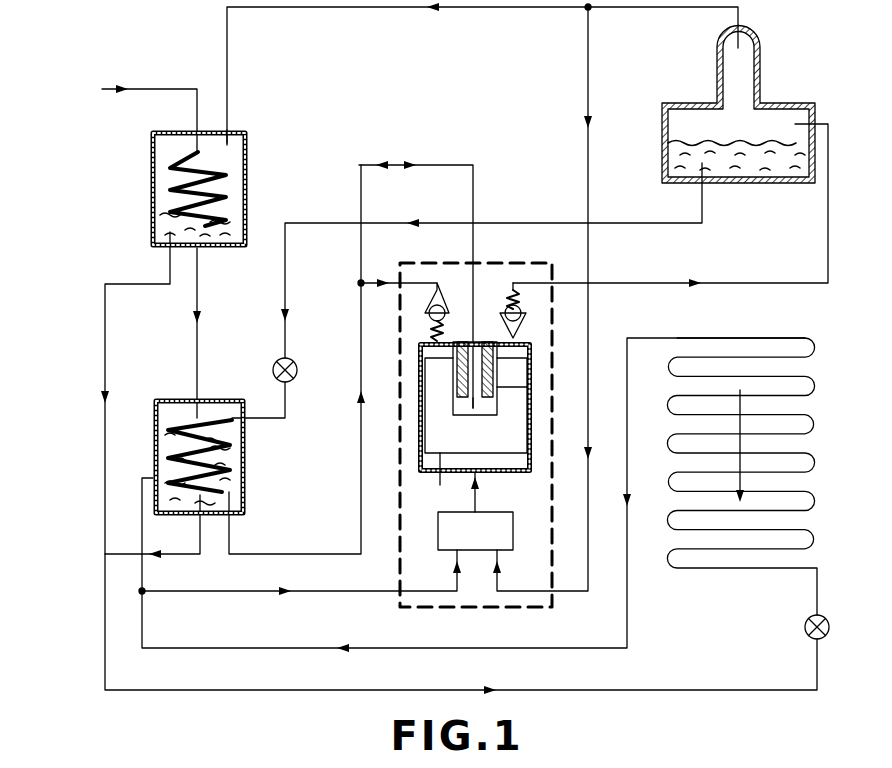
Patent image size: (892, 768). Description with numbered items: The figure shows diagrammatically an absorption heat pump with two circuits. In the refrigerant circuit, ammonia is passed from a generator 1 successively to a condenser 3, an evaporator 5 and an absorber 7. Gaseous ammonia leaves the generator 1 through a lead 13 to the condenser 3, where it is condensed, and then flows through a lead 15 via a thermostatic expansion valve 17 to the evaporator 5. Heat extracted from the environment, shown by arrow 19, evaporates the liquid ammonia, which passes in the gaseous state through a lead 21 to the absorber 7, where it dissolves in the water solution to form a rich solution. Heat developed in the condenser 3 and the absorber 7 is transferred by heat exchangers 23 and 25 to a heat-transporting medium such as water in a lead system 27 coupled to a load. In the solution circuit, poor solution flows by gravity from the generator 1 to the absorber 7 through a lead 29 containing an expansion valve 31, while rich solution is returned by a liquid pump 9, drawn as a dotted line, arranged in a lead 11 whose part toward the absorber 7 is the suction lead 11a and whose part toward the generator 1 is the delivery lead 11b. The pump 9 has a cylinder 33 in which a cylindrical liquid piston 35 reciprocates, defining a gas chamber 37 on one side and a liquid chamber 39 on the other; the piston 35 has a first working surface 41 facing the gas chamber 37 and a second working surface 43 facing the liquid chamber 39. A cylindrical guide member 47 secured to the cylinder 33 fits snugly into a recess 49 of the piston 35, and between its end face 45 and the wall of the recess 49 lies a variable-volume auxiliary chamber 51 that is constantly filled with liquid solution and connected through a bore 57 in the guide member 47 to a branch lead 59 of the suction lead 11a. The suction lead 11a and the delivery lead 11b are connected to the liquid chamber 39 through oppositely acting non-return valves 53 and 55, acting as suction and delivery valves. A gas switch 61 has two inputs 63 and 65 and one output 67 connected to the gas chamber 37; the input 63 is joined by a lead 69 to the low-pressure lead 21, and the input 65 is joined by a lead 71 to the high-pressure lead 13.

The generator 1 is at (780, 103).
The condenser 3 is at (150, 163).
The evaporator 5 is at (782, 413).
The absorber 7 is at (153, 437).
The liquid pump 9 is at (495, 608).
The lead 11 is at (745, 283).
The suction lead 11a is at (411, 283).
The delivery lead 11b is at (527, 283).
The lead 13 is at (467, 8).
The lead 15 is at (107, 320).
The thermostatic expansion valve 17 is at (806, 633).
The arrow 19 is at (745, 443).
The lead 21 is at (143, 526).
The heat exchanger 23 is at (222, 183).
The heat exchanger 25 is at (232, 449).
The lead system 27 is at (140, 89).
The lead 29 is at (633, 224).
The expansion valve 31 is at (296, 364).
The cylinder 33 is at (548, 380).
The liquid piston 35 is at (510, 418).
The gas chamber 37 is at (524, 465).
The liquid chamber 39 is at (428, 336).
The first working surface 41 is at (438, 482).
The second working surface 43 is at (418, 355).
The end face 45 is at (455, 400).
The cylindrical guide member 47 is at (463, 340).
The recess 49 is at (500, 388).
The auxiliary chamber 51 is at (455, 408).
The non-return valve 53 is at (428, 300).
The non-return valve 55 is at (522, 304).
The bore 57 is at (482, 340).
The branch lead 59 is at (437, 165).
The gas switch 61 is at (505, 528).
The input 63 is at (457, 553).
The input 65 is at (497, 553).
The output 67 is at (477, 505).
The lead 69 is at (243, 592).
The lead 71 is at (590, 157).